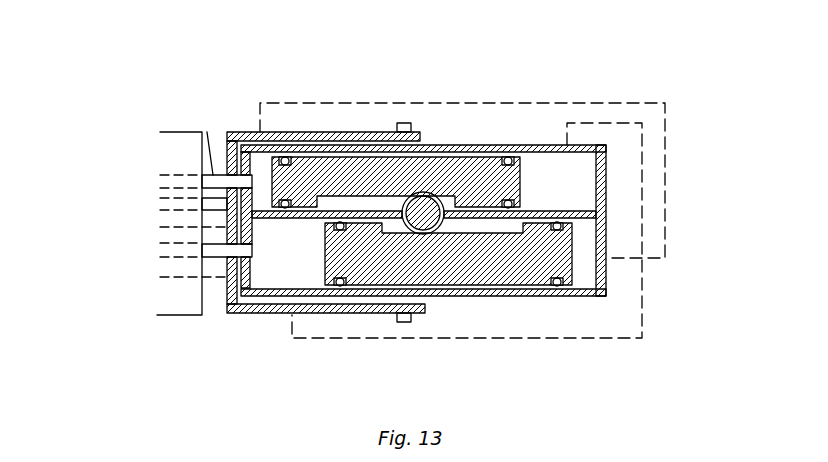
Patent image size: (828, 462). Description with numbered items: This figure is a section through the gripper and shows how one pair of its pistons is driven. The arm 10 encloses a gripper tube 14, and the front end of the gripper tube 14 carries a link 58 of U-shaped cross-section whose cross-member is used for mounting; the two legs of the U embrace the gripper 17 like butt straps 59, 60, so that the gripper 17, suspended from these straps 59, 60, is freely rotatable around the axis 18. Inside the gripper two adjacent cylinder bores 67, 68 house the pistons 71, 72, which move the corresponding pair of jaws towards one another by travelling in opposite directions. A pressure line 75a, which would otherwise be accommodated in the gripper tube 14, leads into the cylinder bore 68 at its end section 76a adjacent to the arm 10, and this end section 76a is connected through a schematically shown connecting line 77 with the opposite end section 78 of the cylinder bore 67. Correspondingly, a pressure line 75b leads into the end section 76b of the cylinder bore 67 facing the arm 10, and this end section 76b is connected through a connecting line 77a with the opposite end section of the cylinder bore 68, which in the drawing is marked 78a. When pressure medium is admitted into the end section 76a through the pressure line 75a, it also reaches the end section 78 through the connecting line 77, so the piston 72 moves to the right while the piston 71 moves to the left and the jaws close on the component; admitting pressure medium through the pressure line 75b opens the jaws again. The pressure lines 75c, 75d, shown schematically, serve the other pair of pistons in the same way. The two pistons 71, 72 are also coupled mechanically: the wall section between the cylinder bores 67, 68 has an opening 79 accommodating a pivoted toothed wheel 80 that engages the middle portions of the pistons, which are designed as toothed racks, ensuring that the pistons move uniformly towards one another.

The arm 10 is at (163, 317).
The gripper tube 14 is at (207, 132).
The gripper 17 is at (512, 305).
The axis 18 is at (398, 125).
The link 58 is at (280, 133).
The butt strap 59 is at (325, 315).
The butt strap 60 is at (320, 150).
The cylinder bore 67 is at (549, 168).
The cylinder bore 68 is at (583, 277).
The piston 71 is at (483, 178).
The piston 72 is at (444, 262).
The pressure line 75a is at (213, 252).
The pressure line 75b is at (202, 183).
The pressure line 75c is at (187, 215).
The pressure line 75d is at (183, 227).
The end section 76a is at (280, 263).
The end section 76b is at (260, 170).
The connecting line 77 is at (642, 220).
The connecting line 77a is at (647, 102).
The end section 78 is at (573, 180).
The lower right chamber 78a is at (588, 262).
The opening 79 is at (458, 198).
The toothed wheel 80 is at (425, 200).